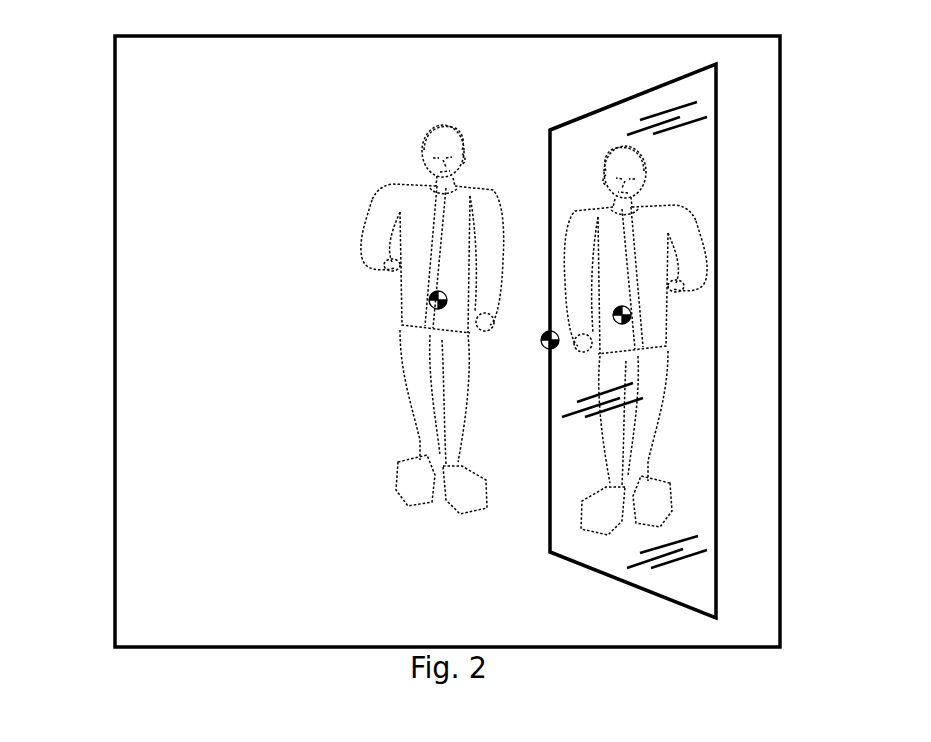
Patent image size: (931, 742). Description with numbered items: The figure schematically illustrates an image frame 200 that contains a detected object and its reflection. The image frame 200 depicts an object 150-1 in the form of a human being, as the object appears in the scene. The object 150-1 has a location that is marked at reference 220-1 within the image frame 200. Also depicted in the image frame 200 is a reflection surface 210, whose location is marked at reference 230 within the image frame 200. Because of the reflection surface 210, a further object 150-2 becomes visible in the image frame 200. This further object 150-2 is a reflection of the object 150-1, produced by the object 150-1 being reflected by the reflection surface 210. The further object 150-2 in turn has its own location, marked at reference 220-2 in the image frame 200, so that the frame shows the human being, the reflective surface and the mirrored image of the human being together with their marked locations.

The image frame 200 is at (115, 343).
The reflection surface 210 is at (717, 130).
The object 150-1 is at (420, 342).
The further object 150-2 is at (648, 368).
The location of the object 220-1 is at (430, 298).
The location of the further object 220-2 is at (631, 314).
The location of the reflection surface 230 is at (548, 348).